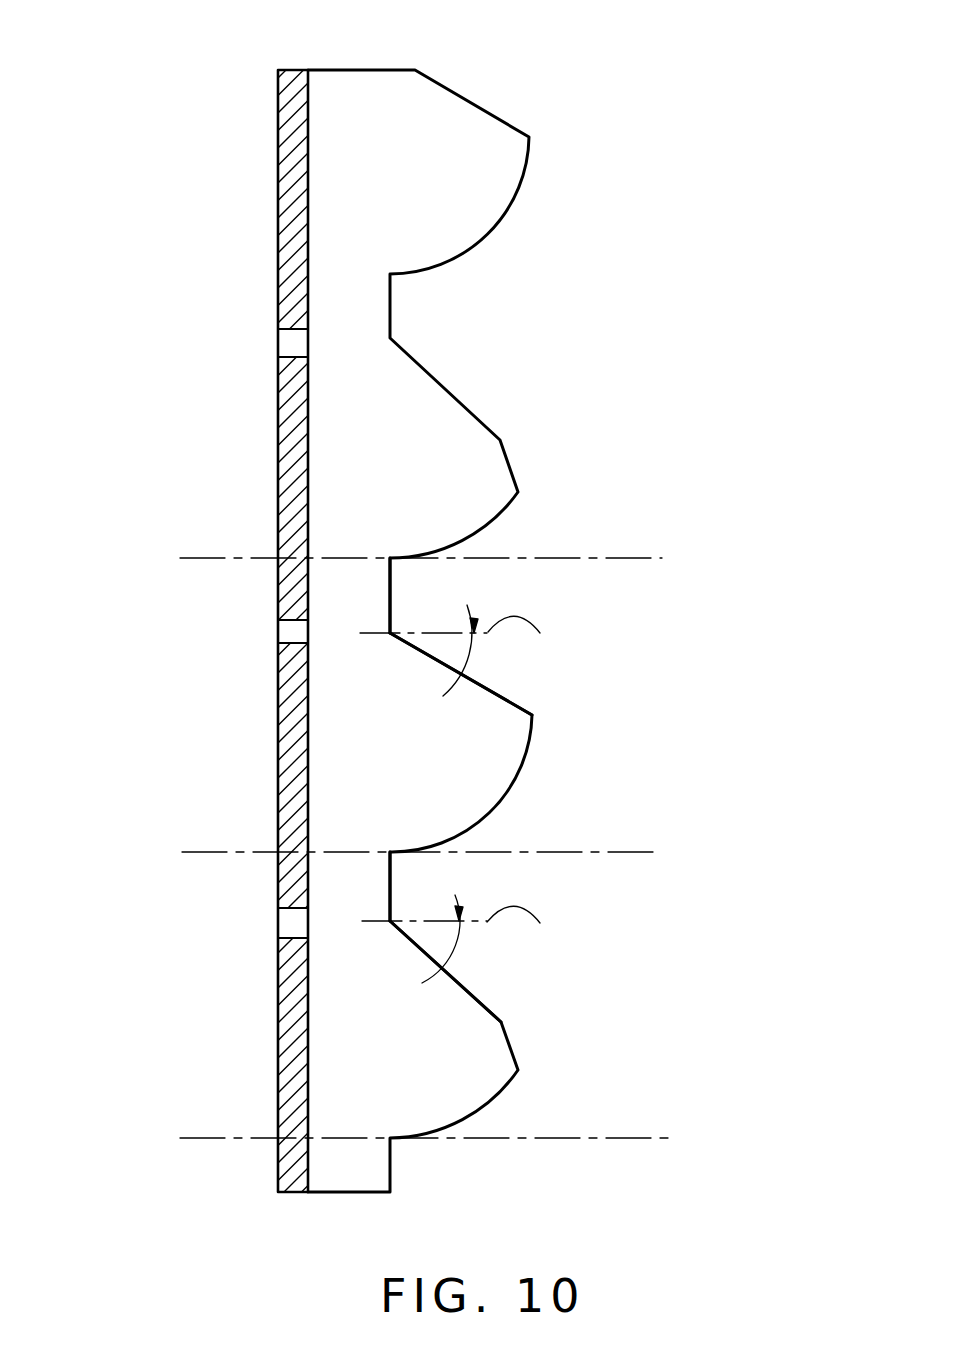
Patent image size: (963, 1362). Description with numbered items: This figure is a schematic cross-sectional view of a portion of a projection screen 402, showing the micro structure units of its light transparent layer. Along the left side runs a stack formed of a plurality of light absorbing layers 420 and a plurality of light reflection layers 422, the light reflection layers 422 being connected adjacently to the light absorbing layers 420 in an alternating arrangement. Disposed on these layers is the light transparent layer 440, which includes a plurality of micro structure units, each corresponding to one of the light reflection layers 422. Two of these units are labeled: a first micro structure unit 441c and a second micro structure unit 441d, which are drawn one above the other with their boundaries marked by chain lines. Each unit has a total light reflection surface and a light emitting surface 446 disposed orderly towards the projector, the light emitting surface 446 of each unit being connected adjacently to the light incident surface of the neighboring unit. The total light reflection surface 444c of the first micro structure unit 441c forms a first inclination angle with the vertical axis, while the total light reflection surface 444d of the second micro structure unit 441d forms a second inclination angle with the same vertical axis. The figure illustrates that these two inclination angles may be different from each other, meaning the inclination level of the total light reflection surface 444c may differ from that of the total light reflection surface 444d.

The valve assembly 402 is at (142, 42).
The light absorbing layer 420 is at (288, 1178).
The light reflection layer 422 is at (297, 932).
The light transparent layer 440 is at (372, 1175).
The first micro structure unit 441c is at (678, 855).
The second micro structure unit 441d is at (677, 567).
The total light reflection surface 444c is at (492, 1012).
The total light reflection surface 444d is at (515, 703).
The light emitting surface 446 is at (390, 600).